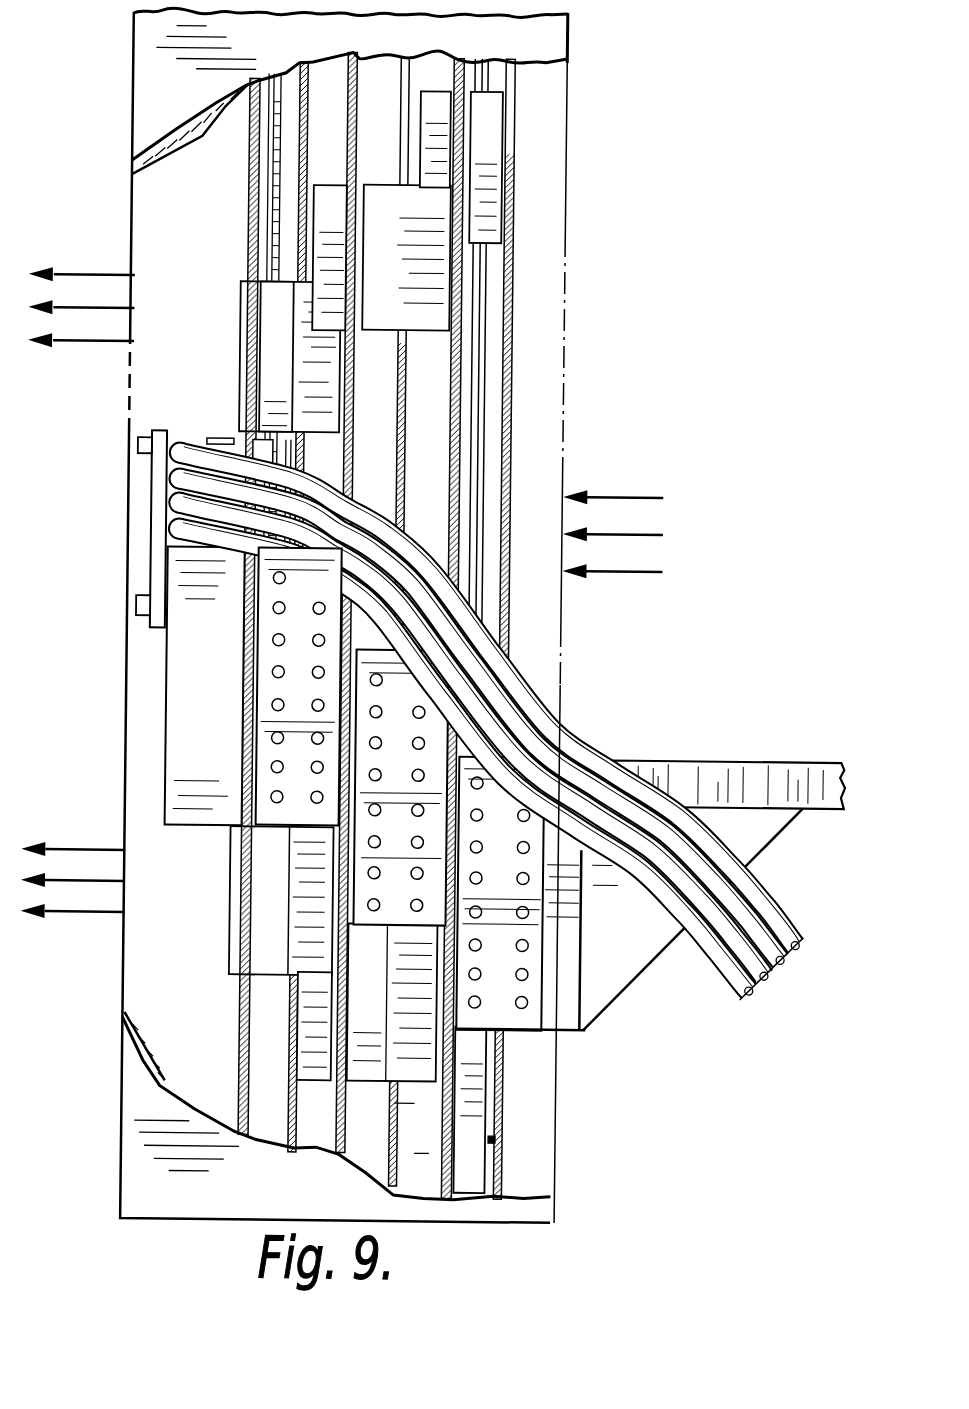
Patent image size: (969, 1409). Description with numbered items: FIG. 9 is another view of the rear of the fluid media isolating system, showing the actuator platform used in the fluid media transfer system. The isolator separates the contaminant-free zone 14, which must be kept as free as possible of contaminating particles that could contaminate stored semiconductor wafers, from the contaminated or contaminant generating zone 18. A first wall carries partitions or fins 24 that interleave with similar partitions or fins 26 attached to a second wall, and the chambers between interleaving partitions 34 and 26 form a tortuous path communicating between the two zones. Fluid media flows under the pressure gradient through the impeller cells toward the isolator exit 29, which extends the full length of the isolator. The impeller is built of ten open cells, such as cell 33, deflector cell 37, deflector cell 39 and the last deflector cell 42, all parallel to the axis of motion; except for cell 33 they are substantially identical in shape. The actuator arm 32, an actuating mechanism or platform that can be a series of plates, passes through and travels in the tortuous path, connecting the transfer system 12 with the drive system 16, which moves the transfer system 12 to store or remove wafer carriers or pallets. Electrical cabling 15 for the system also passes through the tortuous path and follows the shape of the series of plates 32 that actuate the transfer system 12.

The transfer system 12 is at (702, 762).
The contaminant-free zone 14 is at (687, 385).
The electrical cabling 15 is at (581, 733).
The drive system 16 is at (225, 439).
The contaminant generating zone 18 is at (197, 362).
The partitions or fins 24 is at (244, 230).
The partitions or fins 26 is at (508, 166).
The isolator exit 29 is at (489, 298).
The actuator arm 32 is at (525, 1021).
The cell 33 is at (485, 121).
The interleaving partition 34 is at (498, 1136).
The deflector cell 37 is at (431, 225).
The deflector cell 39 is at (320, 196).
The last deflector cell 42 is at (269, 304).